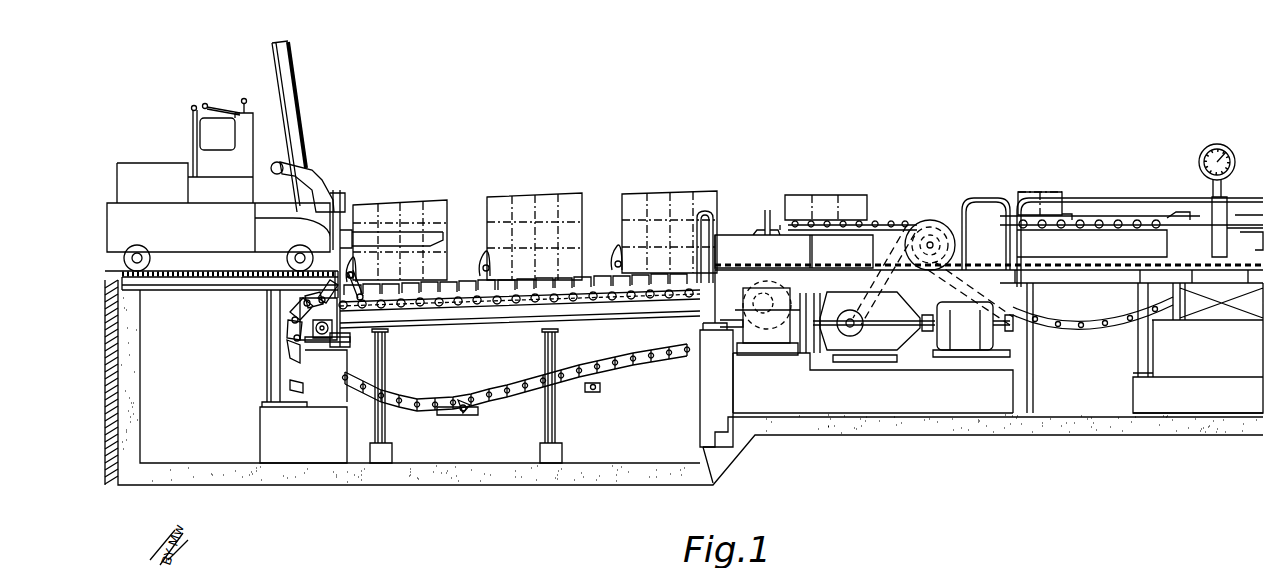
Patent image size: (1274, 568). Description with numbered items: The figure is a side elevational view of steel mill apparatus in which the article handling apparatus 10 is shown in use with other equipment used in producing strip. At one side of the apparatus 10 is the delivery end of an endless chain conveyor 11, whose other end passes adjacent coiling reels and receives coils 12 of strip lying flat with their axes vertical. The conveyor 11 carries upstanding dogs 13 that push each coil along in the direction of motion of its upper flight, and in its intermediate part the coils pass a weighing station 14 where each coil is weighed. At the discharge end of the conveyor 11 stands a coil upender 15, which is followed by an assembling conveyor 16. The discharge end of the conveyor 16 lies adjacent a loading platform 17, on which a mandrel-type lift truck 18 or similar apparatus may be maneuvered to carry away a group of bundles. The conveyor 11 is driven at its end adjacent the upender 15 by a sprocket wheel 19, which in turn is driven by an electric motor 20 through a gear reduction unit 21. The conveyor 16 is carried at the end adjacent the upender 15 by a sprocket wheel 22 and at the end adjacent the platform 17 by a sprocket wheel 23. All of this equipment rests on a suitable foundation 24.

The article handling apparatus 10 is at (776, 232).
The endless chain conveyor 11 is at (1098, 216).
The coils 12 is at (705, 193).
The upstanding dogs 13 is at (1066, 214).
The weighing station 14 is at (1218, 143).
The coil upender 15 is at (874, 226).
The assembling conveyor 16 is at (596, 272).
The loading platform 17 is at (225, 278).
The mandrel-type lift truck 18 is at (292, 113).
The sprocket wheel 19 is at (930, 232).
The electric motor 20 is at (960, 351).
The gear reduction unit 21 is at (878, 352).
The sprocket wheel 22 is at (765, 338).
The sprocket wheel 23 is at (305, 326).
The foundation 24 is at (1100, 423).